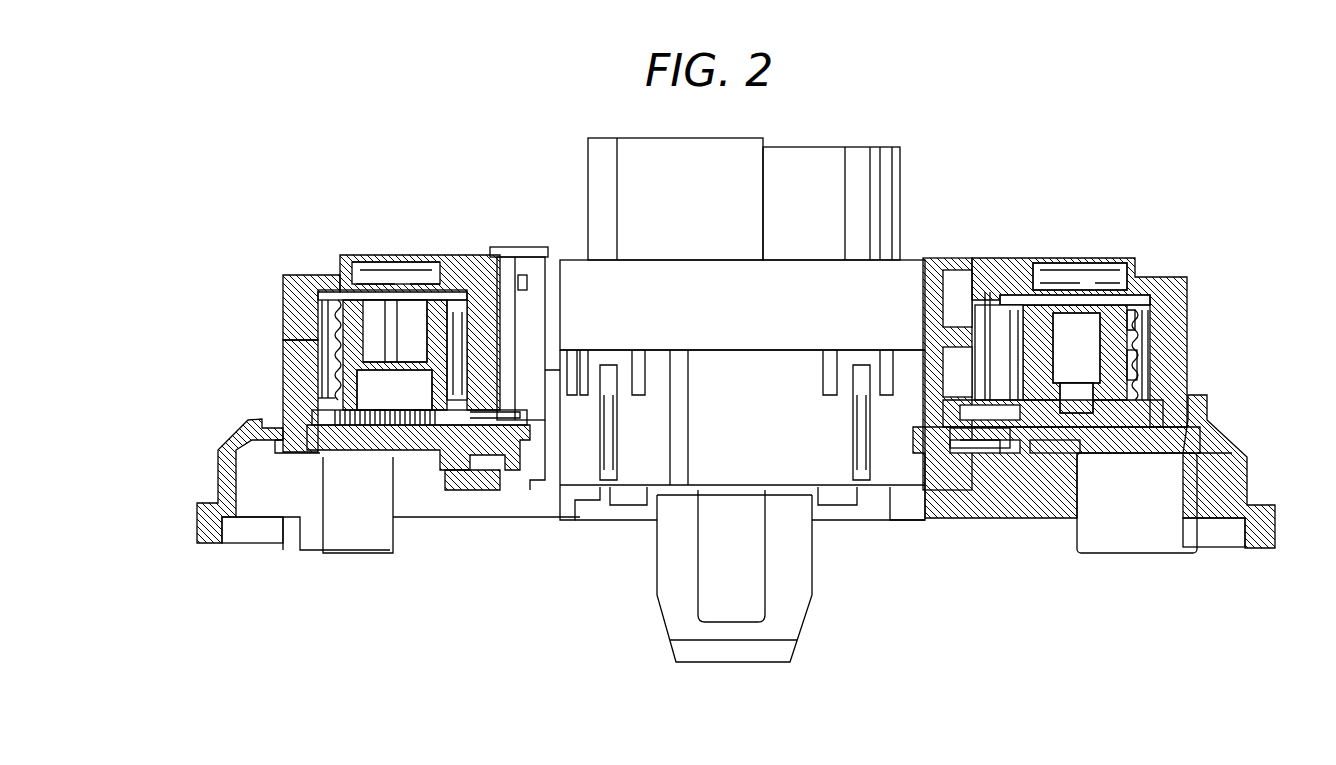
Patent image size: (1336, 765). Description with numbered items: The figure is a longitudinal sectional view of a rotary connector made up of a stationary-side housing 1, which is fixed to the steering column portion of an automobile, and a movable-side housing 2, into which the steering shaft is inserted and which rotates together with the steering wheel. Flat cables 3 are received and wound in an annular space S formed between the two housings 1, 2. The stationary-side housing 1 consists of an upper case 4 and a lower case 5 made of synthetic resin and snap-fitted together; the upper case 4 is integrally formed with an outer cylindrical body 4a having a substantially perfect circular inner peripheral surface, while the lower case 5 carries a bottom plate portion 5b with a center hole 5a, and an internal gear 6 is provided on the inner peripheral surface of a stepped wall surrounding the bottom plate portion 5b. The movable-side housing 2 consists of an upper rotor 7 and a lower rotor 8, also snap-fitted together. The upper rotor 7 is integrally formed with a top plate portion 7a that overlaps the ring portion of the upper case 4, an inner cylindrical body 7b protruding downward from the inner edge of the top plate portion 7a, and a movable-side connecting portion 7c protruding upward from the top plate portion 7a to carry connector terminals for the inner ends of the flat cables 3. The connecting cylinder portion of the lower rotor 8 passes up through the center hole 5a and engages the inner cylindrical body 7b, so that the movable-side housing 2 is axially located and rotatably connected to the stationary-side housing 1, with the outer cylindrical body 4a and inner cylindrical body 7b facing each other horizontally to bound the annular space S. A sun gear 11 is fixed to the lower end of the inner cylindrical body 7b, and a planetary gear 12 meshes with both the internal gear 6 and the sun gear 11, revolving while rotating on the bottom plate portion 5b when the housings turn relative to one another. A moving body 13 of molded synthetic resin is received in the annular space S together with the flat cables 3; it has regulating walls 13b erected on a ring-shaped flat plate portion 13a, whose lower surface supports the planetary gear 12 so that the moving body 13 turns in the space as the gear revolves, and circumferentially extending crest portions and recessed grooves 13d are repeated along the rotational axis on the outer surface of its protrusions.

The stationary-side housing 1 is at (363, 406).
The movable-side housing 2 is at (880, 460).
The flat cables 3 is at (327, 330).
The upper case 4 is at (285, 355).
The outer cylindrical body 4a is at (293, 290).
The lower case 5 is at (262, 428).
The center hole 5a is at (395, 290).
The bottom plate portion 5b is at (385, 448).
The internal gear 6 is at (350, 428).
The upper rotor 7 is at (932, 437).
The top plate portion 7a is at (460, 290).
The inner cylindrical body 7b is at (497, 293).
The movable-side connecting portion 7c is at (882, 154).
The lower rotor 8 is at (975, 472).
The sun gear 11 is at (997, 428).
The planetary gear 12 is at (1040, 450).
The moving body 13 is at (1130, 300).
The flat plate portion 13a is at (1190, 400).
The regulating walls 13b is at (1133, 315).
The recessed grooves 13d is at (1137, 362).
The annular space S is at (327, 286).